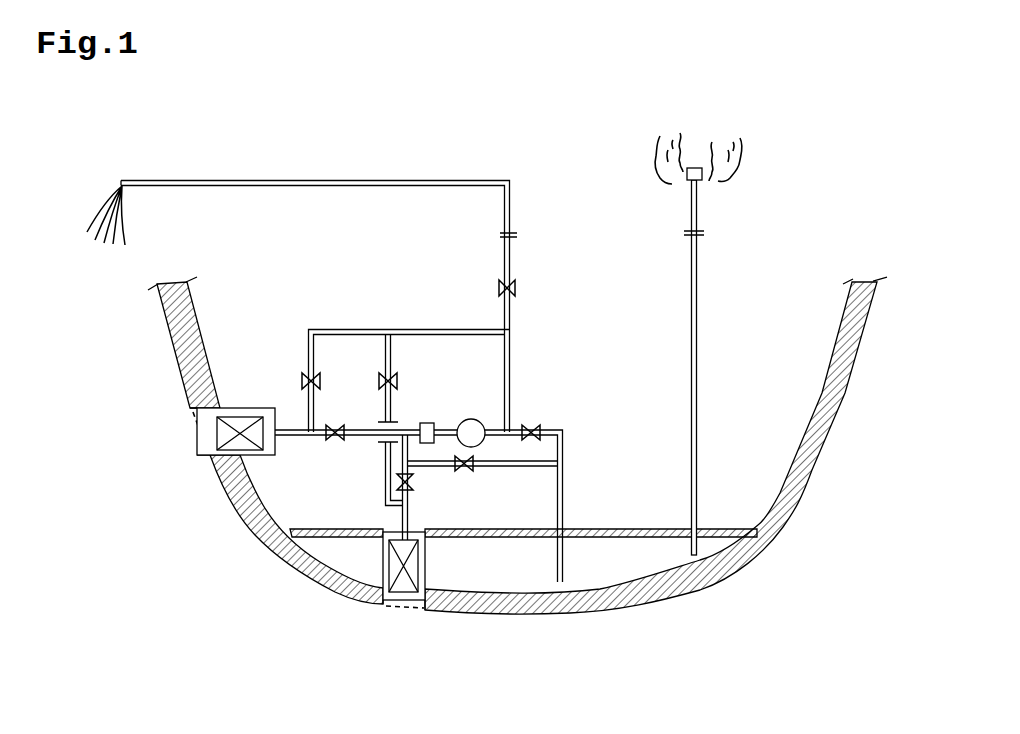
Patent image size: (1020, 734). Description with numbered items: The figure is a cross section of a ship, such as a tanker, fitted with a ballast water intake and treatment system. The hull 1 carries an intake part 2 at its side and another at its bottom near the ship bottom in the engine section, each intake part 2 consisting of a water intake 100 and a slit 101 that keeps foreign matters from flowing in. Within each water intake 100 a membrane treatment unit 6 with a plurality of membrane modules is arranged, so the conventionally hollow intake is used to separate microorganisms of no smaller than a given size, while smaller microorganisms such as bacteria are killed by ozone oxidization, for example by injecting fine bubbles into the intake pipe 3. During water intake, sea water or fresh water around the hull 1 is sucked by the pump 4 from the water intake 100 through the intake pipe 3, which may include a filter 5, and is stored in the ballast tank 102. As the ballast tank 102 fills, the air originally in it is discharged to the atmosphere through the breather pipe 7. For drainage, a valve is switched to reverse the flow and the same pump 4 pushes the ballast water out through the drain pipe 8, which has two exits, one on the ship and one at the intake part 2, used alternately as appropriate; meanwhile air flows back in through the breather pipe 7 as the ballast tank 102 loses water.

The hull 1 is at (160, 320).
The intake part 2 is at (143, 403).
The intake pipe 3 is at (362, 440).
The pump 4 is at (482, 418).
The filter 5 is at (432, 422).
The membrane treatment unit 6 is at (240, 422).
The breather pipe 7 is at (698, 212).
The drain pipe 8 is at (328, 330).
The water intake 100 is at (204, 442).
The slit 101 is at (198, 422).
The ballast tank 102 is at (523, 570).